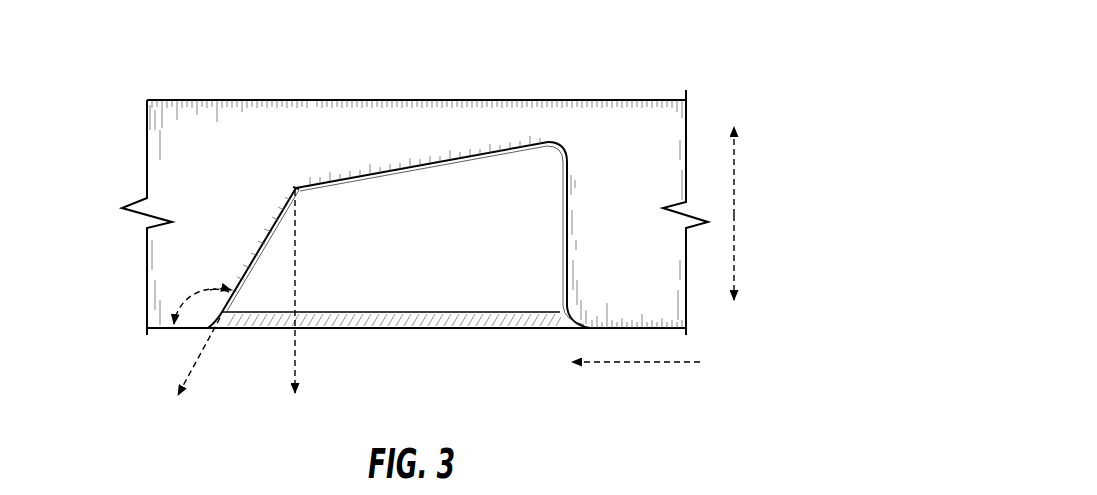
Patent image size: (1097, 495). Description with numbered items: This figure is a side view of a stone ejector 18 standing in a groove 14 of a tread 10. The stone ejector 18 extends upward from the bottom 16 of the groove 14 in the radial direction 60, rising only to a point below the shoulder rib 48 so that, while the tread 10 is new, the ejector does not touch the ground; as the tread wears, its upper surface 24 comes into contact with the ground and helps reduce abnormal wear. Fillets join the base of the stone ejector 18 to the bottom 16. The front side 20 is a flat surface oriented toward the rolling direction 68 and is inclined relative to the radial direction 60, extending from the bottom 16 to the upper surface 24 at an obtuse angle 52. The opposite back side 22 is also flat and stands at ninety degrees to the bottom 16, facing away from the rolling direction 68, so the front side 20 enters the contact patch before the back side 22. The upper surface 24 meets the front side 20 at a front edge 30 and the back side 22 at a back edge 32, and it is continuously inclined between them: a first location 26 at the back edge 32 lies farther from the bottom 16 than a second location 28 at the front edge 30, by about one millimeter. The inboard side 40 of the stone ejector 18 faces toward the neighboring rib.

The tread 10 is at (690, 48).
The groove 14 is at (632, 239).
The bottom of the groove 16 is at (620, 326).
The stone ejector 18 is at (492, 316).
The front side 20 is at (265, 234).
The back side 22 is at (570, 190).
The upper surface 24 is at (416, 162).
The first location 26 is at (598, 136).
The second location 28 is at (252, 170).
The front edge 30 is at (296, 186).
The back edge 32 is at (551, 141).
The inboard side 40 is at (421, 289).
The shoulder rib 48 is at (312, 115).
The angle 52 is at (190, 297).
The radial direction 60 is at (737, 215).
The rolling direction 68 is at (632, 364).